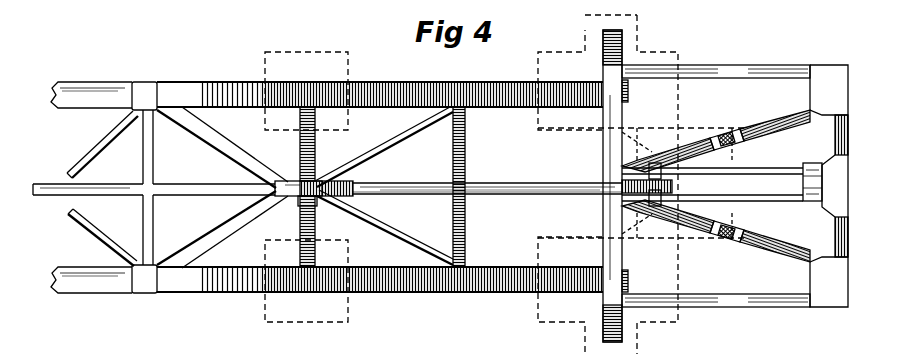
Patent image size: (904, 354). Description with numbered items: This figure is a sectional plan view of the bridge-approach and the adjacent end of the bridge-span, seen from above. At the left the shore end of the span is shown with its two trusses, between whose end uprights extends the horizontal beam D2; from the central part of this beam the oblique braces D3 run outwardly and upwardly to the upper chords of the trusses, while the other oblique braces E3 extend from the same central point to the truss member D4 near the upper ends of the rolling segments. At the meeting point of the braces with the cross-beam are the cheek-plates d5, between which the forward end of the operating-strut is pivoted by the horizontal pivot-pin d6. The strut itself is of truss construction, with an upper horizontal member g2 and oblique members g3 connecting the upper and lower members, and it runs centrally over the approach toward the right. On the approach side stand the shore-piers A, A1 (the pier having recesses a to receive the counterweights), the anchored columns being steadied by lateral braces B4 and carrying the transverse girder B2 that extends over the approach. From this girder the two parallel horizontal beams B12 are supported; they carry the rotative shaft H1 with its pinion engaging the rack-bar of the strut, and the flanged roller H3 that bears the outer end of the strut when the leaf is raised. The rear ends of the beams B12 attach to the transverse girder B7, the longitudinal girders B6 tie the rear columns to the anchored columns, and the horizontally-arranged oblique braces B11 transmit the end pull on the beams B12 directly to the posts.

The main frame beam D is at (327, 188).
The notch or recess a is at (480, 82).
The upper horizontal member g2 is at (536, 195).
The shore-pier A1 is at (325, 50).
The oblique brace D3 is at (230, 145).
The cheek-plate d5 is at (285, 214).
The oblique member g3 is at (343, 182).
The horizontal beam D2 is at (318, 156).
The horizontal pivot-pin d6 is at (317, 208).
The truss member D4 is at (466, 157).
The oblique brace E3 is at (400, 165).
The lateral brace B4 is at (575, 340).
The shore-pier A is at (640, 28).
The horizontal beam or girder B2 is at (623, 118).
The horizontal girder B6 is at (784, 64).
The transverse horizontal girder B7 is at (849, 232).
The horizontally-arranged oblique brace B11 is at (768, 110).
The parallel horizontal beam B12 is at (745, 240).
The rotative shaft H1 is at (672, 192).
The roller H3 is at (823, 180).